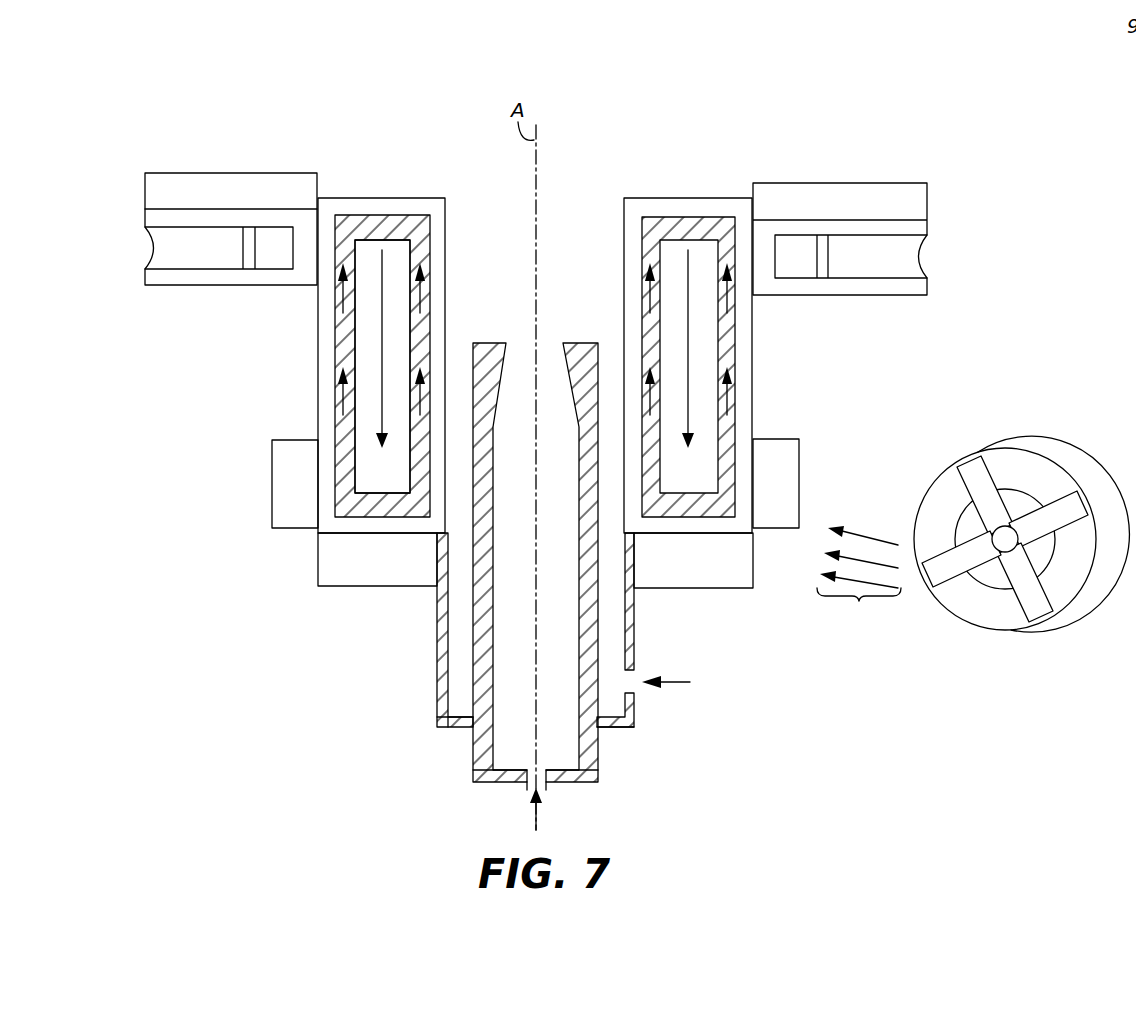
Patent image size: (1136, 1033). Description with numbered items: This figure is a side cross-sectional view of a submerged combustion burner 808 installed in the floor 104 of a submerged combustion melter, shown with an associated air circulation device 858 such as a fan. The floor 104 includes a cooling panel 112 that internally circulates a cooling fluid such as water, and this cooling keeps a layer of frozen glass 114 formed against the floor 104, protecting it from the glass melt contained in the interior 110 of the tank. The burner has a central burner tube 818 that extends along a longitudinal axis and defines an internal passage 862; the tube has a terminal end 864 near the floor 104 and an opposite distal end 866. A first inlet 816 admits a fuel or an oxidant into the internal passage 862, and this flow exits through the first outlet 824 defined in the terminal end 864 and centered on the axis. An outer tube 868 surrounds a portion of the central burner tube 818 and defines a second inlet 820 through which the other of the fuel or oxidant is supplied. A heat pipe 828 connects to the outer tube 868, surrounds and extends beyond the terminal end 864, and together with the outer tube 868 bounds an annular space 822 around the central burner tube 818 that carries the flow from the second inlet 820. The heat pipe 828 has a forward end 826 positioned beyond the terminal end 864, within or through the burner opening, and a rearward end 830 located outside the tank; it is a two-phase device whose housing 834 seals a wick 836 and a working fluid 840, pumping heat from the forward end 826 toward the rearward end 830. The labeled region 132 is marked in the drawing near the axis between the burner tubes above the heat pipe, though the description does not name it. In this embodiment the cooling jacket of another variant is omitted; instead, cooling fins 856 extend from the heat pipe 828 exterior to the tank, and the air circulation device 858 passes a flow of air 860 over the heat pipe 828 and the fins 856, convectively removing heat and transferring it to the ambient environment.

The interior 110 is at (528, 37).
The flow channel 132 is at (597, 262).
The floor 104 is at (138, 248).
The layer of frozen glass 114 is at (226, 190).
The cooling panel 112 is at (162, 278).
The heat pipe 828 is at (337, 186).
The forward end 826 is at (415, 197).
The housing 834 is at (328, 386).
The wick 836 is at (346, 430).
The working fluid 840 is at (343, 306).
The rearward end 830 is at (417, 518).
The cooling fin 856 is at (288, 510).
The central burner tube 818 is at (478, 657).
The second inlet 820 is at (638, 673).
The annular space 822 is at (443, 685).
The outer tube 868 is at (442, 707).
The submerged combustion burner 808 is at (658, 728).
The terminal end 864 is at (484, 343).
The first outlet 824 is at (566, 343).
The internal passage 862 is at (497, 748).
The distal end 866 is at (572, 783).
The first inlet 816 is at (528, 782).
The flow of air 860 is at (859, 578).
The air circulation device 858 is at (993, 644).